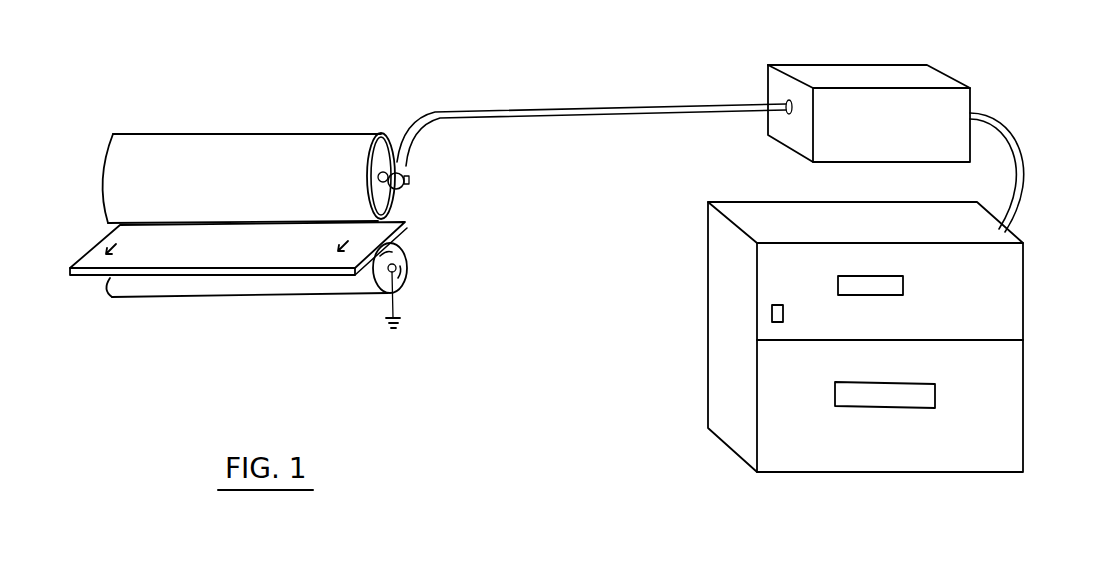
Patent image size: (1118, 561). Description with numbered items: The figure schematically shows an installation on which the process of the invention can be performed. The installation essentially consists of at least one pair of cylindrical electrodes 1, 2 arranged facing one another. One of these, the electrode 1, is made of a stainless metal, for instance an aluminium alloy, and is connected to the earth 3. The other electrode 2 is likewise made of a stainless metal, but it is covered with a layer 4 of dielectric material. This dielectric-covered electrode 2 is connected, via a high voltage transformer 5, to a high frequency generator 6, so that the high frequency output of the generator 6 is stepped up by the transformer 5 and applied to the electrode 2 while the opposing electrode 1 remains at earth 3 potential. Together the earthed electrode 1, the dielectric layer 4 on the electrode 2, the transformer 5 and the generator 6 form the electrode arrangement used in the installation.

The cylindrical electrode 1 is at (409, 268).
The cylindrical electrode 2 is at (392, 166).
The earth 3 is at (399, 323).
The layer of dielectric material 4 is at (382, 133).
The high voltage transformer 5 is at (872, 76).
The high frequency generator 6 is at (1026, 362).